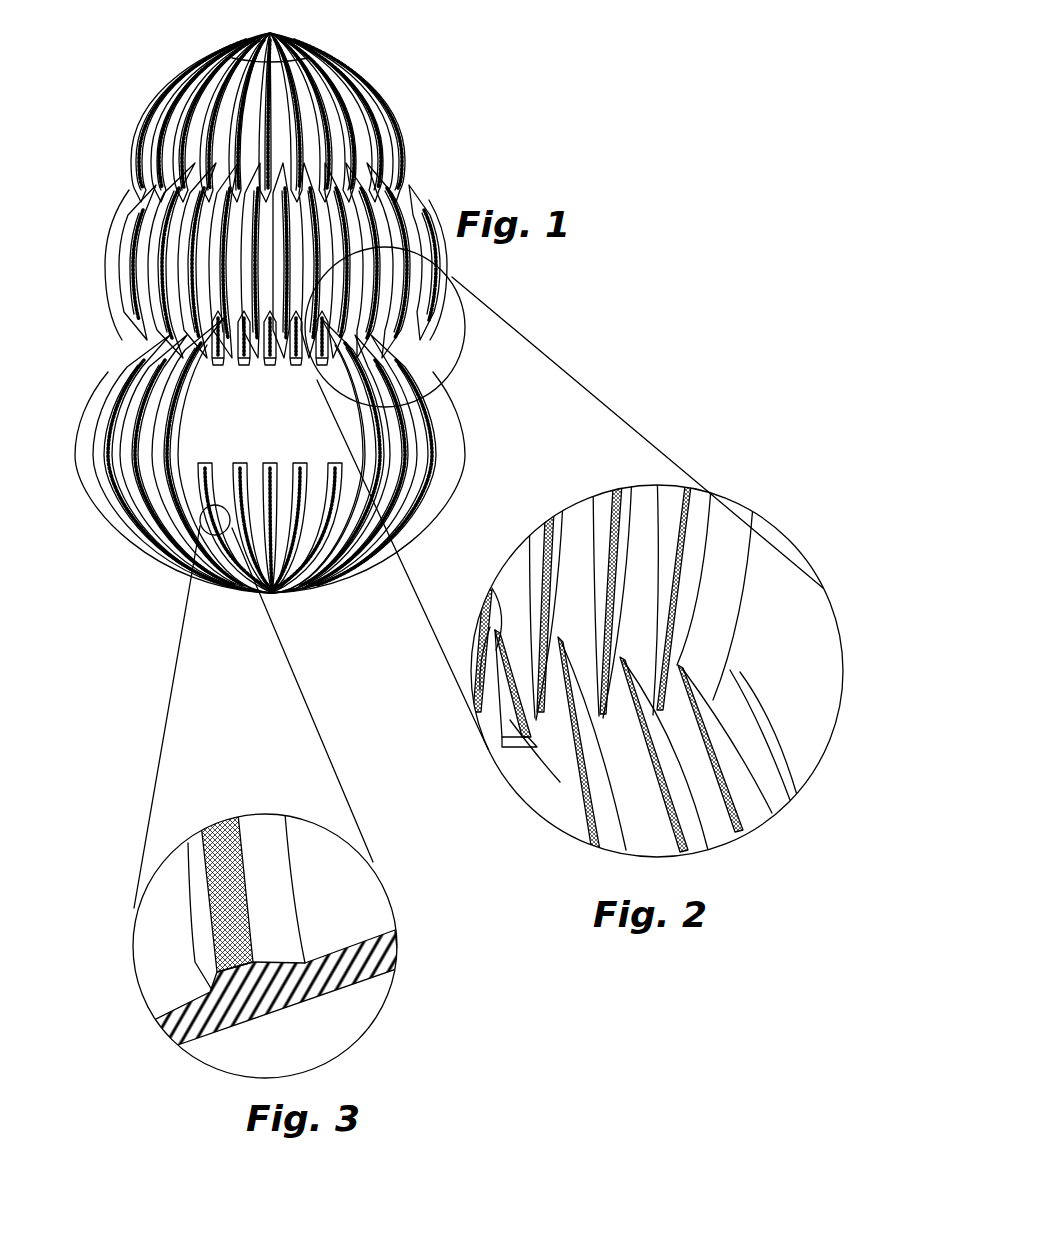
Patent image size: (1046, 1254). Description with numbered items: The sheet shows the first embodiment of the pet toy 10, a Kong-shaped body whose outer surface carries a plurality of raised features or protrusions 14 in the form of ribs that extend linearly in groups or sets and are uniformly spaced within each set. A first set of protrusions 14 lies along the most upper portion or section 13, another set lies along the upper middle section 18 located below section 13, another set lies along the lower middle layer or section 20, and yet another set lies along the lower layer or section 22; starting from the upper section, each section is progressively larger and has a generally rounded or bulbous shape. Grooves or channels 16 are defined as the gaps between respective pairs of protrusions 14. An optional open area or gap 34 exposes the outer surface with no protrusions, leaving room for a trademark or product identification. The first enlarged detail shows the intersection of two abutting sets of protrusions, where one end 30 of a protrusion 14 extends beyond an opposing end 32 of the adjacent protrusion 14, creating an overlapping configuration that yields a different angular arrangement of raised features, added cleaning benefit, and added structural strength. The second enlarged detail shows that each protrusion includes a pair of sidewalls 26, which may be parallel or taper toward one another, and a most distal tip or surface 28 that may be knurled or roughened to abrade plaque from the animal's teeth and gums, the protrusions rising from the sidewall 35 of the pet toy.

In FIG. 1, the pet toy 10 is at (438, 86).
In FIG. 1, the most upper portion or section 13 is at (323, 23).
In FIG. 1, the raised features or protrusions 14 is at (242, 46).
In FIG. 2, the raised features or protrusions 14 is at (601, 500).
In FIG. 3, the raised features or protrusions 14 is at (252, 795).
In FIG. 2, the grooves or channels 16 is at (641, 498).
In FIG. 3, the grooves or channels 16 is at (255, 950).
In FIG. 1, the upper middle section 18 is at (442, 130).
In FIG. 1, the lower middle layer or section 20 is at (470, 254).
In FIG. 1, the lower layer or section 22 is at (496, 456).
In FIG. 3, the sidewalls 26 is at (258, 865).
In FIG. 3, the most distal tip or surface 28 is at (218, 838).
In FIG. 2, the one end of a protrusion 30 is at (496, 596).
In FIG. 2, the opposing end of the adjacent protrusion 32 is at (553, 770).
In FIG. 1, the open area or gap 34 is at (206, 403).
In FIG. 3, the sidewall of the pet toy 35 is at (352, 975).